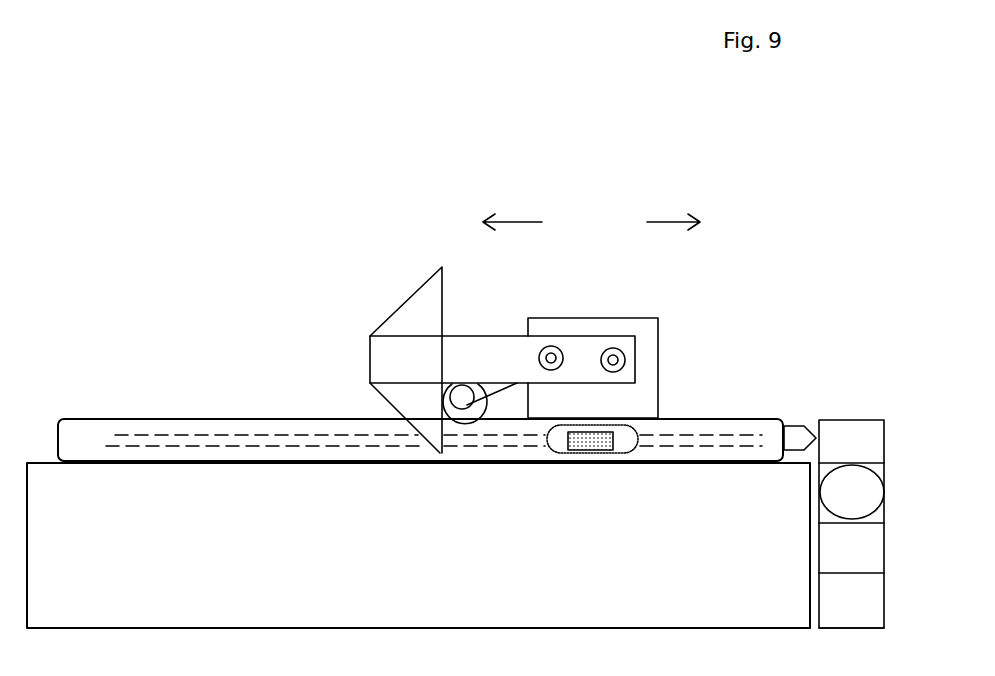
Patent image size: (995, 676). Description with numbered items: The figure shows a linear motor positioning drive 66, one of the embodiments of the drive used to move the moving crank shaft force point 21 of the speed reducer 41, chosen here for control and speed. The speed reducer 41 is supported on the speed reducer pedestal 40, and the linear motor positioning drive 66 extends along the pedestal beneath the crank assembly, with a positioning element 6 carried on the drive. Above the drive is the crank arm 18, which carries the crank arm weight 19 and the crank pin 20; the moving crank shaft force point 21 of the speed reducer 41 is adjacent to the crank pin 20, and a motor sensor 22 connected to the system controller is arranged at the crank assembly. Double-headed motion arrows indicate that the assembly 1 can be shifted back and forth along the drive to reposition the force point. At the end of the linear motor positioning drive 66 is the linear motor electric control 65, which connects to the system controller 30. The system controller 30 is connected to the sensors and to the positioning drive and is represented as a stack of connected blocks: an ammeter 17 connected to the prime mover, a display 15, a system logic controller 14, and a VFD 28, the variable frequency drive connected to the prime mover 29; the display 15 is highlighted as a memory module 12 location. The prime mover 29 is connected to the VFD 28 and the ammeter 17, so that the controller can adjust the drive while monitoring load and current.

The application device / carriage assembly 1 is at (499, 383).
The positioning element 6 is at (598, 445).
The memory module 12 is at (878, 472).
The system logic controller 14 is at (833, 558).
The display 15 is at (833, 501).
The ammeter 17 is at (833, 456).
The crank arm 18 is at (380, 357).
The crank arm weight 19 is at (418, 298).
The crank pin 20 is at (542, 353).
The moving crank shaft force point 21 is at (612, 358).
The motor sensor 22 is at (467, 407).
The VFD 28 is at (833, 616).
The prime mover 29 is at (441, 404).
The system controller 30 is at (877, 490).
The speed reducer pedestal 40 is at (391, 568).
The speed reducer 41 is at (643, 340).
The linear motor electric control 65 is at (797, 432).
The linear motor positioning drive 66 is at (160, 428).